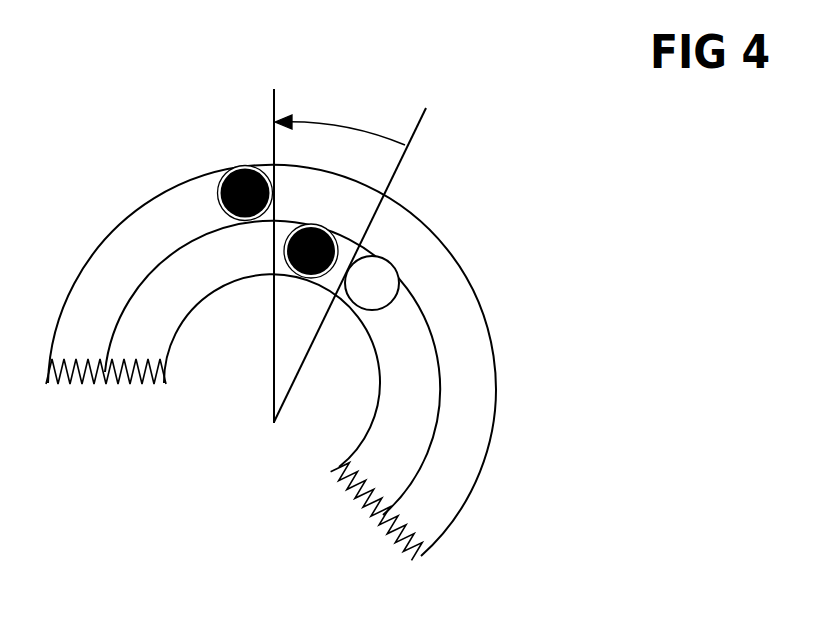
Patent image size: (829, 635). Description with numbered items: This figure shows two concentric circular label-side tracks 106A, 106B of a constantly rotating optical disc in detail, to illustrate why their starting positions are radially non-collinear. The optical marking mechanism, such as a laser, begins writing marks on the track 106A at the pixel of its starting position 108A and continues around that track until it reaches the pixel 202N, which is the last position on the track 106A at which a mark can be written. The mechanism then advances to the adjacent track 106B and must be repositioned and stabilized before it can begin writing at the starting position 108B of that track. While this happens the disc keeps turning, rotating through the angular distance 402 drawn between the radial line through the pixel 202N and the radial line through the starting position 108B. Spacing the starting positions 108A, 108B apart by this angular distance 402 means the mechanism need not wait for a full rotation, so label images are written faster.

The track 106A is at (358, 465).
The track 106B is at (422, 553).
The starting position 108A is at (307, 279).
The starting position 108B is at (231, 171).
The pixel 202N is at (370, 300).
The angular distance 402 is at (385, 68).